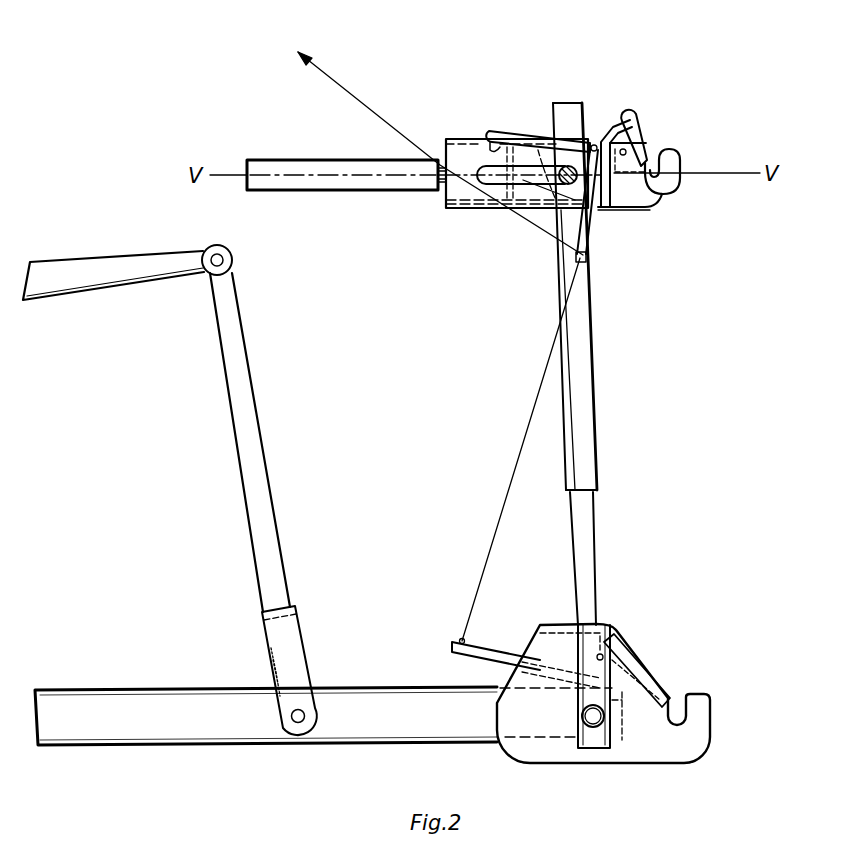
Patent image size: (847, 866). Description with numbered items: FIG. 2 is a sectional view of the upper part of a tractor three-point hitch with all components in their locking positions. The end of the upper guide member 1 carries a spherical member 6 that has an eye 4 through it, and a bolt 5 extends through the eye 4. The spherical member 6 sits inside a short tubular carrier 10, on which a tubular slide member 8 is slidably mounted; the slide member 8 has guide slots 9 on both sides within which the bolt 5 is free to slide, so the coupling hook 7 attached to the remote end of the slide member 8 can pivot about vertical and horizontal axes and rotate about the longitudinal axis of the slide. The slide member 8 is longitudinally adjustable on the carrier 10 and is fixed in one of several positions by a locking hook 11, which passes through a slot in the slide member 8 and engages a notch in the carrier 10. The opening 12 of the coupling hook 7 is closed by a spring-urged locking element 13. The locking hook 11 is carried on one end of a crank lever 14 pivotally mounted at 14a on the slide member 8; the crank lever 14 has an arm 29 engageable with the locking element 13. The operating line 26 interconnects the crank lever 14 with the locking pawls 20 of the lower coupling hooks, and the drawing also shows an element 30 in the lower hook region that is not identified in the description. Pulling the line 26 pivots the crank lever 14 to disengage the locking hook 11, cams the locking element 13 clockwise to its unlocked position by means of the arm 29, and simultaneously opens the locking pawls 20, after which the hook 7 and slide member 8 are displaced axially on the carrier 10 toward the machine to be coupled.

The upper guide member 1 is at (262, 165).
The eye 4 is at (562, 150).
The bolt 5 is at (562, 183).
The spherical member 6 is at (573, 102).
The coupling hook 7 is at (632, 184).
The tubular slide member 8 is at (608, 211).
The guide slots 9 is at (468, 168).
The tubular carrier 10 is at (483, 163).
The locking hook 11 is at (490, 130).
The opening of the coupling hook 12 is at (665, 180).
The locking element 13 is at (640, 142).
The crank lever 14 is at (590, 236).
The pivot of the crank lever 14a is at (600, 134).
The locking pawl 20 is at (672, 700).
The operating line 26 is at (327, 83).
The arm of the crank lever 29 is at (628, 121).
The pawl 30 is at (633, 652).